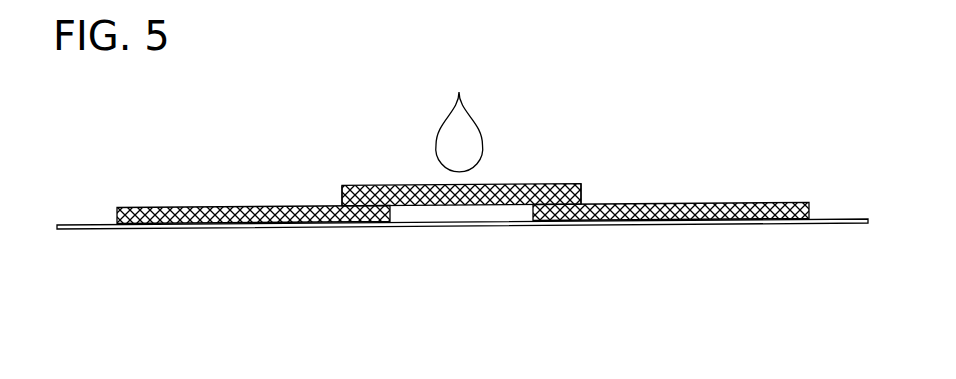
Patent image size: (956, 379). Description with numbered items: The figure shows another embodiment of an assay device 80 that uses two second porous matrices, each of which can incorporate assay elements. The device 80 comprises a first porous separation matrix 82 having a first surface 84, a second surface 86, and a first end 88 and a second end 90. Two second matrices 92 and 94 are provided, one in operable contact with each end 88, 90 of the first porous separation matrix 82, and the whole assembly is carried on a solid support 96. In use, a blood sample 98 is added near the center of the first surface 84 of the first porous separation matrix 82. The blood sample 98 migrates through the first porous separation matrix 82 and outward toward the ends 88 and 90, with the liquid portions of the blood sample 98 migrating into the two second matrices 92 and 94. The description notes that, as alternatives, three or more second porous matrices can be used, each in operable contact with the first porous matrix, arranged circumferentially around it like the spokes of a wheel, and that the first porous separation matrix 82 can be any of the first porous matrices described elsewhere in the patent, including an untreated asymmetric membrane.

The device 80 is at (752, 138).
The first porous separation matrix 82 is at (403, 188).
The first surface 84 is at (540, 184).
The second surface 86 is at (453, 205).
The first end 88 is at (340, 187).
The second end 90 is at (587, 193).
The second matrix 92 is at (270, 214).
The second matrix 94 is at (737, 205).
The solid support 96 is at (503, 228).
The blood sample 98 is at (460, 140).